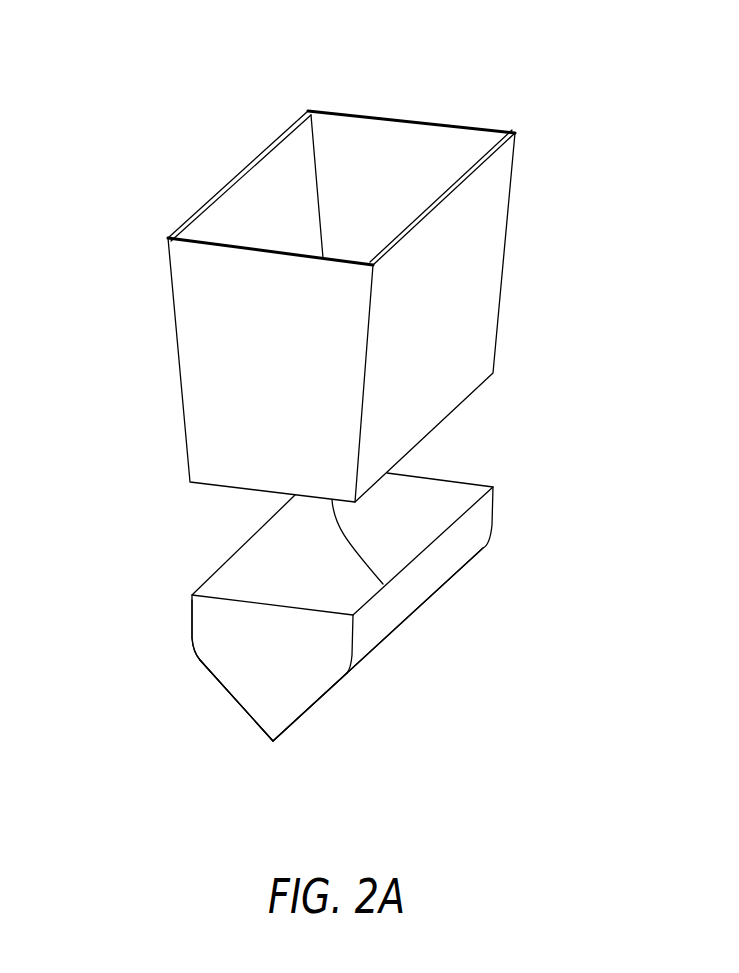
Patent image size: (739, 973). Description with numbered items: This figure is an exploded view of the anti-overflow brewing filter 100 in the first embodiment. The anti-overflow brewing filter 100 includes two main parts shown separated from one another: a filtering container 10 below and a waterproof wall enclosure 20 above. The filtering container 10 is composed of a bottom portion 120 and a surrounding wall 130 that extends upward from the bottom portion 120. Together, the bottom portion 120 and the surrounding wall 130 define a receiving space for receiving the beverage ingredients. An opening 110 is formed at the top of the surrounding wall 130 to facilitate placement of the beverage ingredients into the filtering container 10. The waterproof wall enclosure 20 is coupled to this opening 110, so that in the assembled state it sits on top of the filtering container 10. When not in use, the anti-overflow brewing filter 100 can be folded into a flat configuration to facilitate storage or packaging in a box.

The anti-overflow brewing filter 100 is at (624, 50).
The waterproof wall enclosure 20 is at (487, 257).
The filtering container 10 is at (339, 650).
The opening 110 is at (250, 556).
The bottom portion 120 is at (268, 745).
The surrounding wall 130 is at (218, 637).